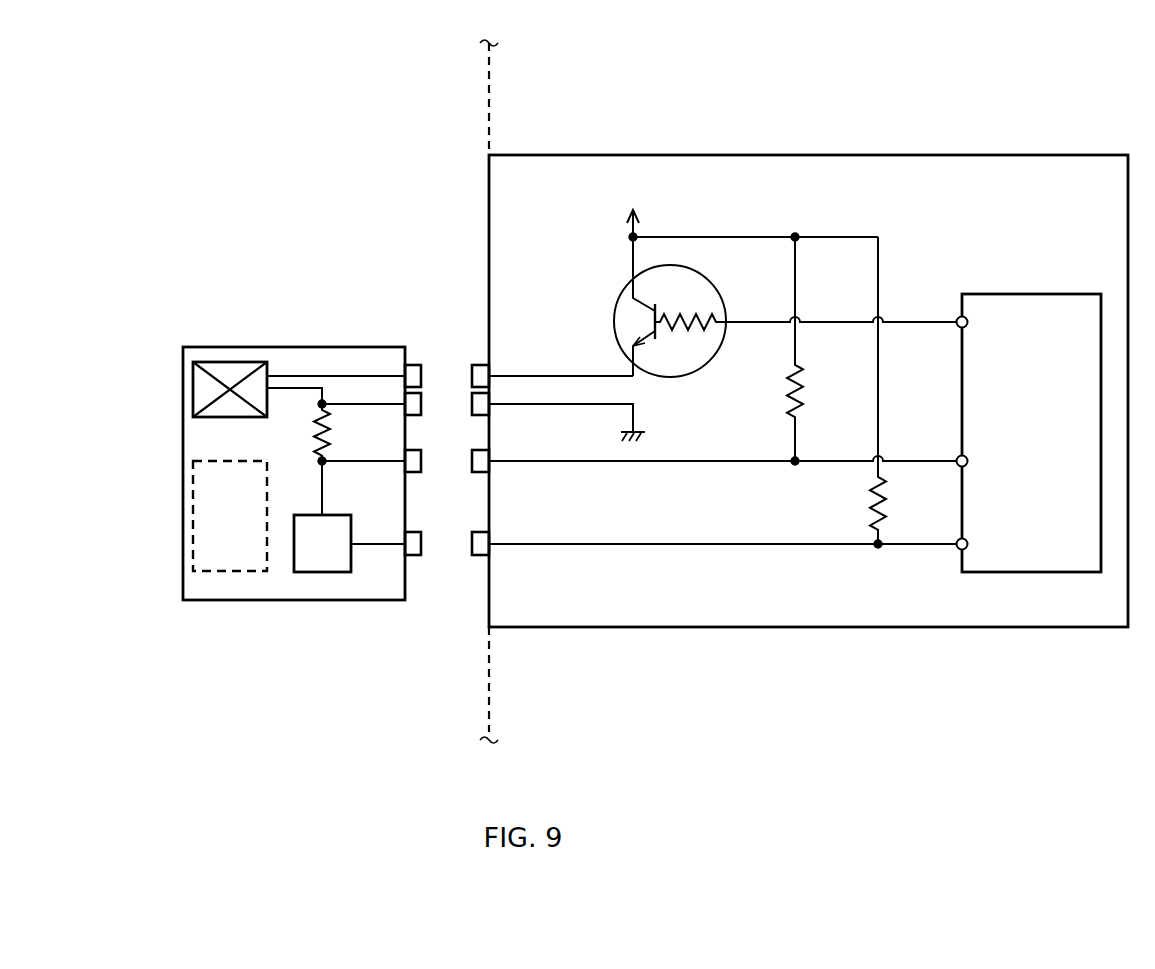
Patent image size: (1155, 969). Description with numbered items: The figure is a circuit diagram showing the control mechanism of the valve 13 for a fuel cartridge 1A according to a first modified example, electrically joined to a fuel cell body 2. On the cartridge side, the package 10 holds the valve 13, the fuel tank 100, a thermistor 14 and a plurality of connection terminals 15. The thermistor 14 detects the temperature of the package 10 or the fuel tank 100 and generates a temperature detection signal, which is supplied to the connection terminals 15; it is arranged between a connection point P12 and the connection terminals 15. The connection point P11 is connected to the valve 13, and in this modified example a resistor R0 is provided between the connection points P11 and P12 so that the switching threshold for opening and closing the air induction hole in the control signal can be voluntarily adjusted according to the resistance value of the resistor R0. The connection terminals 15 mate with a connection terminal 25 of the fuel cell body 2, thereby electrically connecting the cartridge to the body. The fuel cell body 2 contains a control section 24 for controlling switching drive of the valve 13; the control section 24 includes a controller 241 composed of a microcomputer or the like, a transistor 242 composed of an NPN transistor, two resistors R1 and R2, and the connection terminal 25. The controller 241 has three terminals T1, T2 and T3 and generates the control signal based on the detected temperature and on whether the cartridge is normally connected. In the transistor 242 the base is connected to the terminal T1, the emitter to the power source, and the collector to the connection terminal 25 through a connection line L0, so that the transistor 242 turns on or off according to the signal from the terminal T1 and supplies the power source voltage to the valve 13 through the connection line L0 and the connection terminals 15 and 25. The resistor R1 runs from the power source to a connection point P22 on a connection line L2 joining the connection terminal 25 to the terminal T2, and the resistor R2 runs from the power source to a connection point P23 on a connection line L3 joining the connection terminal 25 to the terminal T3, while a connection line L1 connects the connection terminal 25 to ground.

The fuel cartridge 1A is at (137, 270).
The fuel cell body 2 is at (487, 97).
The package 10 is at (290, 347).
The valve 13 is at (192, 389).
The resistor R0 is at (297, 445).
The connection point P11 is at (324, 402).
The connection point P12 is at (323, 463).
The thermistor 14 is at (320, 572).
The fuel tank 100 is at (230, 572).
The connection terminals 15 is at (420, 358).
The control section 24 is at (1013, 155).
The connection terminal 25 is at (480, 358).
The connection line L0 is at (513, 375).
The connection line L1 is at (512, 405).
The connection line L2 is at (570, 462).
The connection line L3 is at (570, 546).
The transistor 242 is at (612, 300).
The resistor R1 is at (782, 392).
The resistor R2 is at (865, 493).
The connection point P22 is at (805, 458).
The connection point P23 is at (878, 552).
The controller 241 is at (1015, 294).
The terminal T1 is at (957, 317).
The terminal T2 is at (957, 456).
The terminal T3 is at (957, 539).